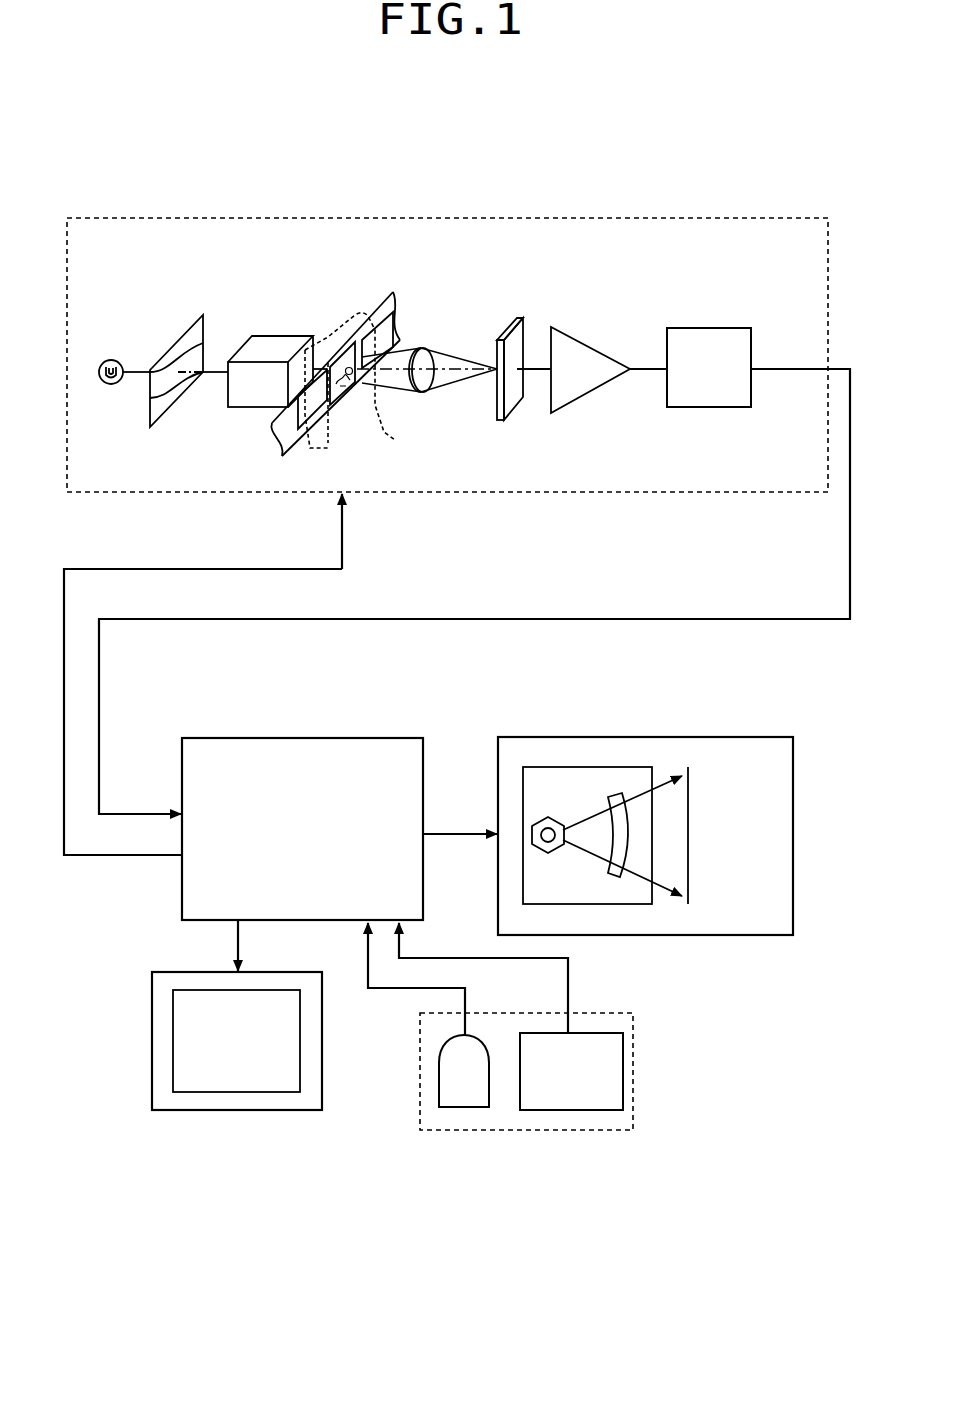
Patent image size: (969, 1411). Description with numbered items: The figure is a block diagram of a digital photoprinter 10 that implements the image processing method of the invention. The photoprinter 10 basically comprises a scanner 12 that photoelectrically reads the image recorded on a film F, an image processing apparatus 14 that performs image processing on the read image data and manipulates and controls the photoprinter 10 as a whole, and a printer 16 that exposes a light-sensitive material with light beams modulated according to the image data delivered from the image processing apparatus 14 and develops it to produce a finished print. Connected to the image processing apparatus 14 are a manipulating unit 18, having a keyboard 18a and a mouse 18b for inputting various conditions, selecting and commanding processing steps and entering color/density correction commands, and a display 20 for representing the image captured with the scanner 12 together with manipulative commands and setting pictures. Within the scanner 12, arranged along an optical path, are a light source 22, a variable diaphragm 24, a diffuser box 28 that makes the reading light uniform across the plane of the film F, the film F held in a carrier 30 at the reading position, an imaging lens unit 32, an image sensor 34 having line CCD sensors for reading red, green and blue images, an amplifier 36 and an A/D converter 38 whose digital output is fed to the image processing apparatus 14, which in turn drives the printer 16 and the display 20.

The photoprinter 10 is at (705, 189).
The scanner 12 is at (280, 217).
The image processing apparatus 14 is at (326, 738).
The printer 16 is at (643, 737).
The manipulating unit 18 is at (525, 1119).
The keyboard 18a is at (575, 1110).
The mouse 18b is at (460, 1108).
The display 20 is at (227, 1112).
The light source 22 is at (110, 358).
The variable diaphragm 24 is at (183, 340).
The diffuser box 28 is at (267, 355).
The film F is at (385, 290).
The carrier 30 is at (395, 440).
The imaging lens unit 32 is at (422, 346).
The image sensor 34 is at (517, 343).
The amplifier 36 is at (593, 392).
The A/D converter 38 is at (732, 328).